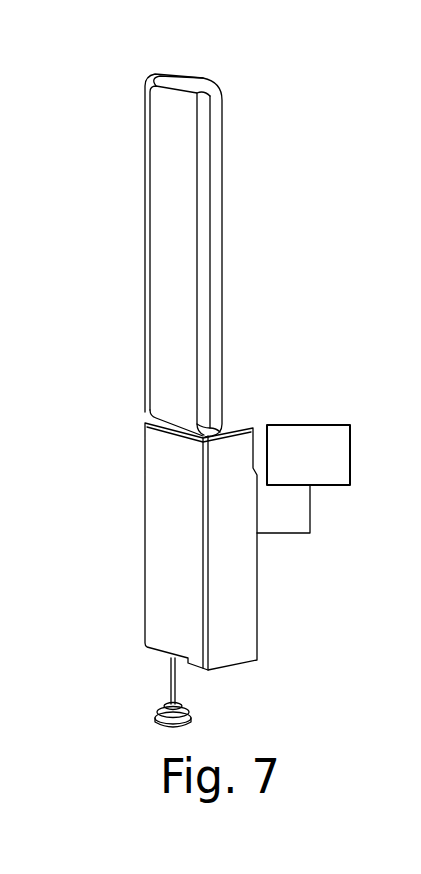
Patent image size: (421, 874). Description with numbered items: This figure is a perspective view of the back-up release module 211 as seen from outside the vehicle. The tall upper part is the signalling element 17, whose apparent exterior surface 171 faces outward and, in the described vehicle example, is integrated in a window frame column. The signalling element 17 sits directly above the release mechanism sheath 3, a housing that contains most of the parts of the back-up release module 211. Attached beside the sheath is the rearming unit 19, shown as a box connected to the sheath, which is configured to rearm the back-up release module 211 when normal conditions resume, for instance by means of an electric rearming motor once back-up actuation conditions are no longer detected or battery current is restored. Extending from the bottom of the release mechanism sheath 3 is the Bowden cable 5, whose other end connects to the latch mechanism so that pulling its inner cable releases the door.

The back-up release module 211 is at (292, 97).
The signalling element 17 is at (245, 83).
The apparent exterior surface 171 is at (160, 177).
The release mechanism sheath 3 is at (145, 478).
The rearming unit 19 is at (303, 479).
The Bowden cable 5 is at (170, 675).